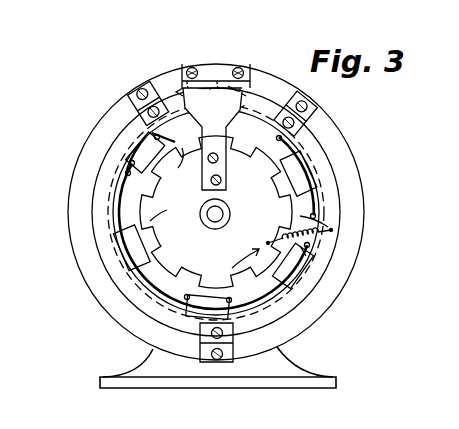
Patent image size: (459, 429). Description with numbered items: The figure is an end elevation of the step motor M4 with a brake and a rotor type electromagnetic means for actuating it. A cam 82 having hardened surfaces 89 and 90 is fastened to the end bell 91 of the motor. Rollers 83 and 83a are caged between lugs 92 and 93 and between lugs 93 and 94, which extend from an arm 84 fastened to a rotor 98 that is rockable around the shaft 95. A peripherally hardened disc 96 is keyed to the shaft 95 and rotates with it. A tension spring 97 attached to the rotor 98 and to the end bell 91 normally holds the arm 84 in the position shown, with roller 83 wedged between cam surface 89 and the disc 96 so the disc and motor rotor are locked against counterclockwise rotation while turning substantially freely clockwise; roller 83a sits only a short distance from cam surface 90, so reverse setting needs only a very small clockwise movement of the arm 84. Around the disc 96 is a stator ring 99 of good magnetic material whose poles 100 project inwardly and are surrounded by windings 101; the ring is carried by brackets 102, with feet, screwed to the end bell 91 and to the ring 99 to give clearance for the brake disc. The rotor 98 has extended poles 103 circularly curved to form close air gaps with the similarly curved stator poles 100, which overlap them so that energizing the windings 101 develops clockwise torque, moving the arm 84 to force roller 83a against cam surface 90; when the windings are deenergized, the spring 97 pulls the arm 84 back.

The cam 82 is at (222, 57).
The roller 83 is at (186, 90).
The roller 83a is at (243, 94).
The arm 84 is at (233, 150).
The hardened cam surface 89 is at (185, 85).
The hardened cam surface 90 is at (247, 70).
The end bell 91 is at (359, 191).
The lug 92 is at (165, 133).
The lug 93 is at (212, 139).
The lug 94 is at (250, 116).
The shaft 95 is at (213, 214).
The peripherally hardened disc 96 is at (73, 276).
The tension spring 97 is at (293, 232).
The rotor 98 is at (229, 258).
The stator ring 99 is at (92, 197).
The stator poles 100 is at (281, 174).
The windings 101 is at (128, 152).
The brackets 102 is at (134, 95).
The rotor poles 103 is at (234, 212).
The motor M4 is at (97, 116).